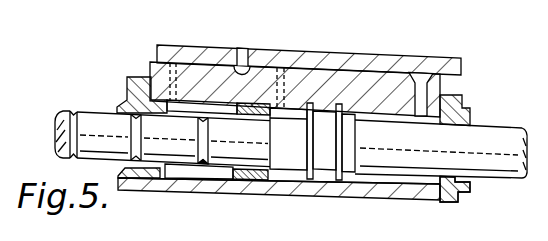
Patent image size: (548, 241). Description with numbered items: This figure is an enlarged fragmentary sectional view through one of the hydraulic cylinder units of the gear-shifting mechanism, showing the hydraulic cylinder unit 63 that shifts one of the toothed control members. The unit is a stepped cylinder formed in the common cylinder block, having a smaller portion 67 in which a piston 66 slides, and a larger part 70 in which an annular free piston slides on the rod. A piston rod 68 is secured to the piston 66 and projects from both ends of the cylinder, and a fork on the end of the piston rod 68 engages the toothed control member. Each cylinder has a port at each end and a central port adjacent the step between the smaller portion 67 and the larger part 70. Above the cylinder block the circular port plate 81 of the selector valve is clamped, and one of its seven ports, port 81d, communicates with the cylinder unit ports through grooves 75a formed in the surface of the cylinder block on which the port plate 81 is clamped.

The hydraulic cylinder unit 63 is at (291, 196).
The piston 66 is at (323, 165).
The smaller portion of the cylinder 67 is at (388, 176).
The piston rod 68 is at (257, 177).
The larger part of the cylinder 70 is at (203, 168).
The grooves 75a is at (339, 72).
The port plate 81 is at (175, 53).
The port 81d is at (239, 58).